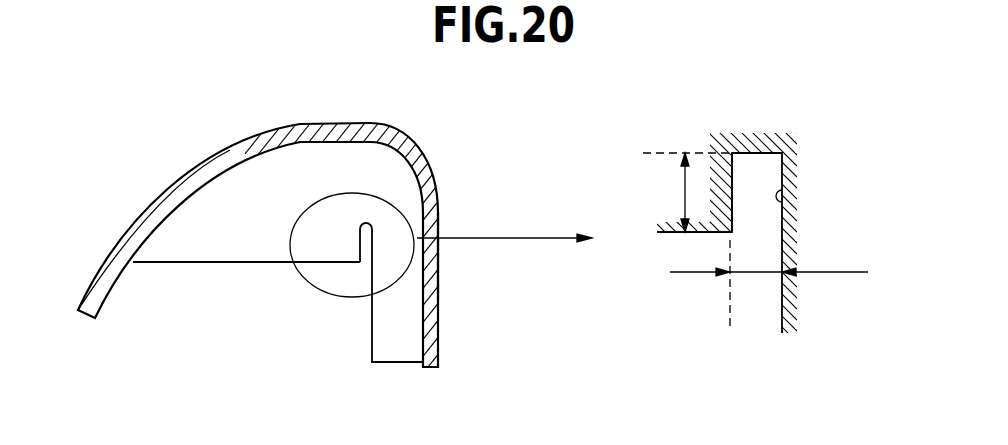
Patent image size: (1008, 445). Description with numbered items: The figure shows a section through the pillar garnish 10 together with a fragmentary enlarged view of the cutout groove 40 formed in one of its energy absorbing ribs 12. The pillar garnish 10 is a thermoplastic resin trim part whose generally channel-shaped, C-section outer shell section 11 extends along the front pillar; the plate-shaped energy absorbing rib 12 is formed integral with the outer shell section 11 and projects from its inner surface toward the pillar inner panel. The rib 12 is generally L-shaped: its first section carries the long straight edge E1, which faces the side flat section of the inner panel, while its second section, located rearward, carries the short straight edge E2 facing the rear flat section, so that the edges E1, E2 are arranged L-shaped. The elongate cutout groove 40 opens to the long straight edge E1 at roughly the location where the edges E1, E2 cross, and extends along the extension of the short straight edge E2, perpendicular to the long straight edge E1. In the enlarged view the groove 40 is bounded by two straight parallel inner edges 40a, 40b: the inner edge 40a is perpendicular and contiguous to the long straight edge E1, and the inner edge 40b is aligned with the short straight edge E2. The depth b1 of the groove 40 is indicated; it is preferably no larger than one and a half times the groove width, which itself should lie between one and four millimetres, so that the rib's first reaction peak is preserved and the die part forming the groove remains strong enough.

The pillar garnish 10 is at (432, 173).
The outer shell section 11 is at (438, 212).
The energy absorbing rib 12 is at (350, 162).
The cutout groove 40 is at (365, 250).
The inner edge 40a is at (733, 186).
The inner edge 40b is at (782, 190).
The long straight edge E1 is at (190, 263).
The short straight edge E2 is at (368, 335).
The depth of cutout groove b1 is at (663, 192).